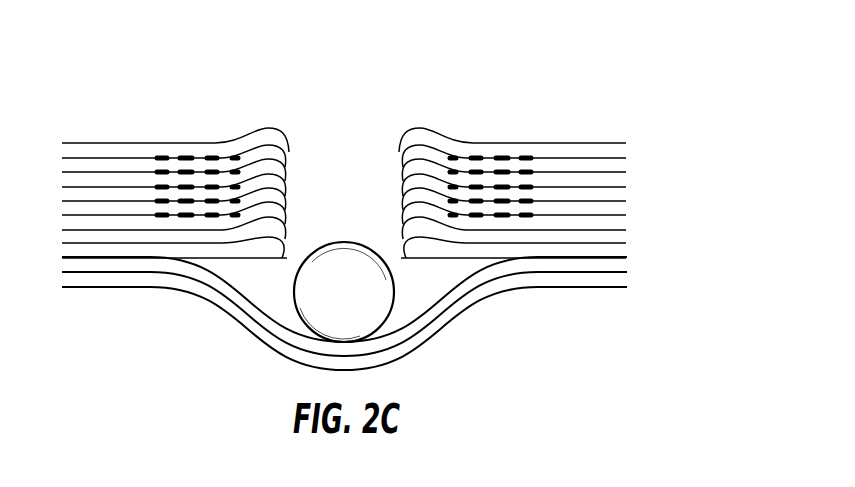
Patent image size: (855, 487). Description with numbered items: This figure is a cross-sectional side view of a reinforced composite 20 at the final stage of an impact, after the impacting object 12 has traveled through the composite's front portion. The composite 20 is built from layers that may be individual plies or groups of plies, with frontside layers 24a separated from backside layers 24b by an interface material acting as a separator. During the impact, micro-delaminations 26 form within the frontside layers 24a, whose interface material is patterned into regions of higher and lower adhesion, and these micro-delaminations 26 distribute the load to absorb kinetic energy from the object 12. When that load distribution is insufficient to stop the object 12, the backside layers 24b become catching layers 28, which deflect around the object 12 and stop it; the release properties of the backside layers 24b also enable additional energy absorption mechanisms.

The composite 20 is at (631, 68).
The object 12 is at (347, 242).
The frontside layers 24a is at (642, 258).
The backside layers 24b is at (642, 287).
The micro-delaminations 26 is at (207, 156).
The catching layers 28 is at (493, 298).